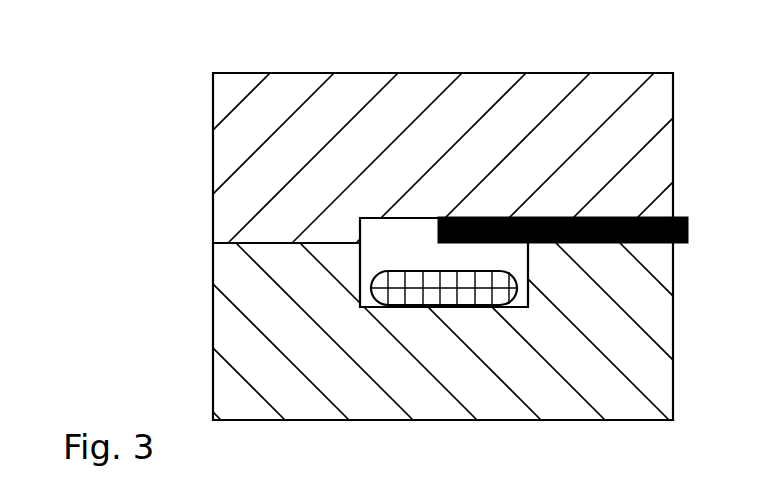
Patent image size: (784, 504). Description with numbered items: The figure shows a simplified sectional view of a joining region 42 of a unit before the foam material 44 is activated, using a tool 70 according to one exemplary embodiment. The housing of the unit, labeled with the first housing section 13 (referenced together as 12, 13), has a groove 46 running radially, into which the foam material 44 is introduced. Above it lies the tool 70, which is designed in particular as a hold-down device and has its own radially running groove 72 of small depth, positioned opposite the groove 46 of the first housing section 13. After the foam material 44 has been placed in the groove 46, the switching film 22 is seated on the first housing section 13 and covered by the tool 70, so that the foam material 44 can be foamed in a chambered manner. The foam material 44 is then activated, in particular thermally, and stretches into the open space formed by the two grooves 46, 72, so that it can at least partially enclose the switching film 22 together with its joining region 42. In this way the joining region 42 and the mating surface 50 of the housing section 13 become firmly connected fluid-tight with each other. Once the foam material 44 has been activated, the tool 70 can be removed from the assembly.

The tool 70 is at (227, 165).
The housing 12 is at (392, 249).
The first housing section 13 is at (233, 332).
The groove 72 is at (373, 218).
The groove 46 is at (360, 307).
The switching film 22 is at (688, 218).
The joining region 42 is at (500, 251).
The foam material 44 is at (480, 287).
The mating surface 50 is at (447, 308).